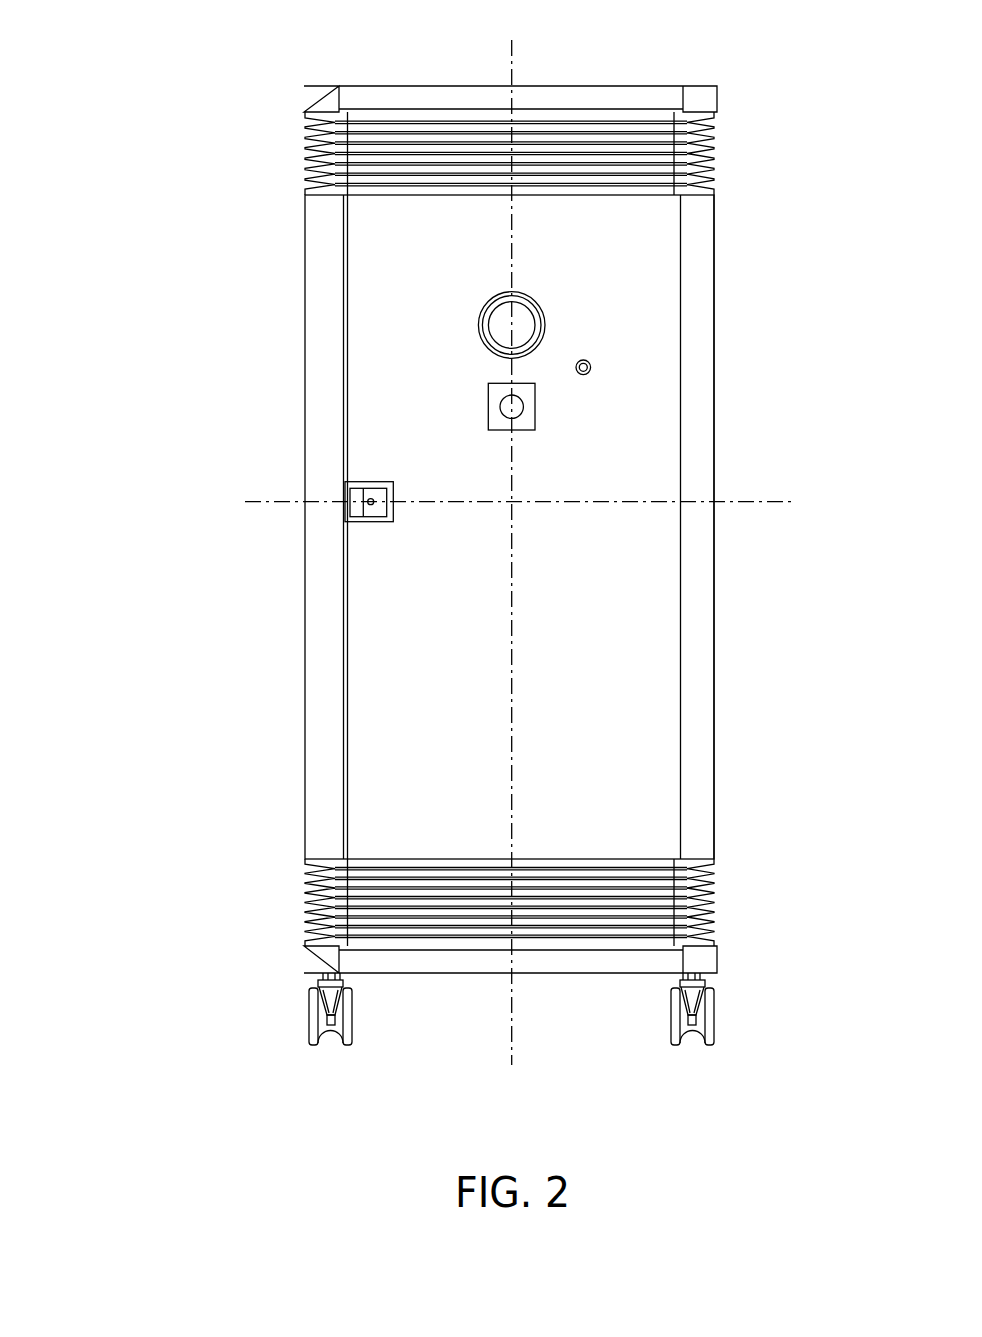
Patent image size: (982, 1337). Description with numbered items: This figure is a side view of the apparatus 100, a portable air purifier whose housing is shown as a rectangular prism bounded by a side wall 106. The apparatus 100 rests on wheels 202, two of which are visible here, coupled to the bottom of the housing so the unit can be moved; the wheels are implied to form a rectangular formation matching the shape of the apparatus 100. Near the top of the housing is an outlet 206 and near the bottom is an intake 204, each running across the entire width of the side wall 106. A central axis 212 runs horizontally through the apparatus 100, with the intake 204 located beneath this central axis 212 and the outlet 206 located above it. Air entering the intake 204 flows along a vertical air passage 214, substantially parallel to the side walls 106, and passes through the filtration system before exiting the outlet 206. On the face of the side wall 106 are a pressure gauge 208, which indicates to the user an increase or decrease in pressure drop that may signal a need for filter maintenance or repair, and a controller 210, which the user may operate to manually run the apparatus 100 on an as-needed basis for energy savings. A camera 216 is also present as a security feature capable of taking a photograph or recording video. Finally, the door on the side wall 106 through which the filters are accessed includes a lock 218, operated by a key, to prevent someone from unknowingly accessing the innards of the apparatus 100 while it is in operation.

The apparatus 100 is at (226, 92).
The side wall 106 is at (655, 636).
The wheel 202 is at (310, 1021).
The intake 204 is at (307, 887).
The outlet 206 is at (713, 173).
The pressure gauge 208 is at (503, 319).
The controller 210 is at (523, 405).
The central axis 212 is at (480, 536).
The air passage 214 is at (511, 586).
The camera 216 is at (592, 367).
The lock 218 is at (373, 510).